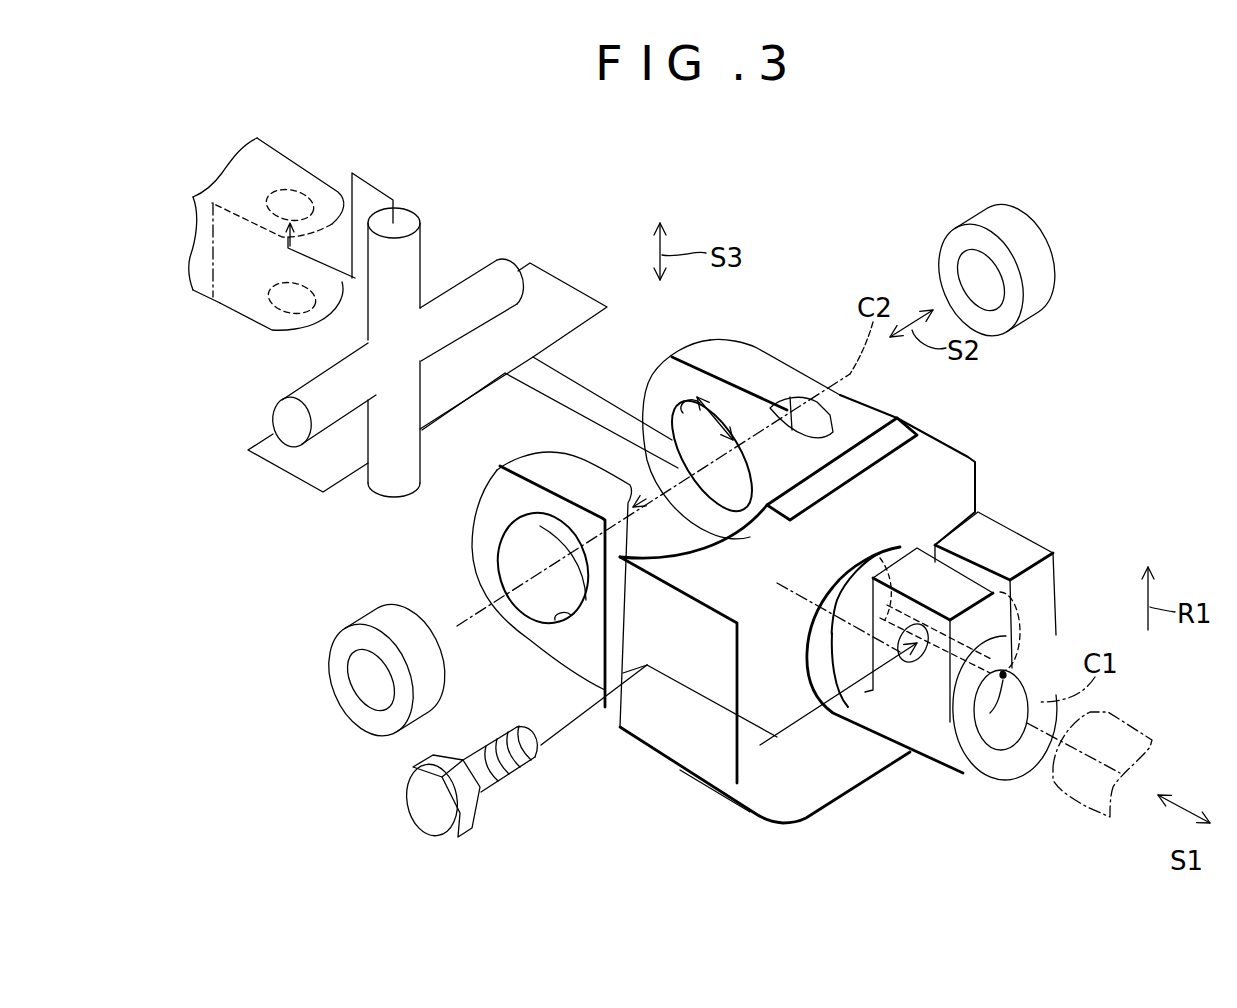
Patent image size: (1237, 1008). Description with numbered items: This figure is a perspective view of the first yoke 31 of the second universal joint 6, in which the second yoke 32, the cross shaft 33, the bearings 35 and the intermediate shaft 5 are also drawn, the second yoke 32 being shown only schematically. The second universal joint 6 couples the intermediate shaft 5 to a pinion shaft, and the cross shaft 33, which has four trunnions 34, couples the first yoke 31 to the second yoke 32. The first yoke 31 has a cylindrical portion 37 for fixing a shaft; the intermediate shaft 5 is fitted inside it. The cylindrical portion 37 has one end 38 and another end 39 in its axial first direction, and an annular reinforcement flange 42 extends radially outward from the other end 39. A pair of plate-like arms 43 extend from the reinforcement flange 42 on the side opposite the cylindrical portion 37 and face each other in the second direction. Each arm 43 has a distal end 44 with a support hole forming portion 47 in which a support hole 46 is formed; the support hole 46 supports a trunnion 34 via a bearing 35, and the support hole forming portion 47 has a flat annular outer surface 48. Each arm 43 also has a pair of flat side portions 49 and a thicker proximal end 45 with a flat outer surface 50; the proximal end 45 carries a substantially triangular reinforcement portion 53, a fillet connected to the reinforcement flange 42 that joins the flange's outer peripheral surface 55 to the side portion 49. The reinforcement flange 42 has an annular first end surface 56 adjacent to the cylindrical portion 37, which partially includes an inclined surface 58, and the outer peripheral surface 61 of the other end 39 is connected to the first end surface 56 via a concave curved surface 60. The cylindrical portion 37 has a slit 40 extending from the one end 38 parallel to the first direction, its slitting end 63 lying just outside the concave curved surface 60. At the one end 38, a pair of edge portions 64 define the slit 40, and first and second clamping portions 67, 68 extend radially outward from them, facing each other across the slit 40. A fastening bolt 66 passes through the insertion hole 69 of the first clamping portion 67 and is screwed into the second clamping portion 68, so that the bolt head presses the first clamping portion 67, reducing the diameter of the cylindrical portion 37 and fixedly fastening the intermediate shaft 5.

The intermediate shaft 5 is at (1110, 722).
The second universal joint 6 is at (718, 803).
The first yoke 31 is at (749, 578).
The second yoke 32 is at (293, 162).
The cross shaft 33 is at (376, 371).
The trunnion 34 is at (498, 272).
The bearing 35 is at (343, 693).
The cylindrical portion 37 is at (928, 767).
The one end 38 is at (1000, 770).
The other end 39 is at (870, 650).
The slit 40 is at (990, 663).
The reinforcement flange 42 is at (836, 626).
The arm 43 is at (500, 525).
The distal end 44 is at (612, 512).
The proximal end 45 is at (685, 707).
The support hole 46 is at (547, 623).
The support hole forming portion 47 is at (538, 463).
The outer surface 48 is at (513, 617).
The side portion 49 is at (598, 490).
The outer surface 50 is at (637, 723).
The reinforcement portion 53 is at (858, 407).
The outer peripheral surface 55 is at (940, 396).
The first end surface 56 is at (937, 476).
The inclined surface 58 is at (883, 500).
The concave curved surface 60 is at (935, 670).
The outer peripheral surface 61 is at (863, 620).
The slitting end 63 is at (924, 616).
The edge portion 64 is at (1013, 657).
The fastening bolt 66 is at (500, 802).
The first clamping portion 67 is at (937, 567).
The second clamping portion 68 is at (1017, 553).
The insertion hole 69 is at (908, 657).